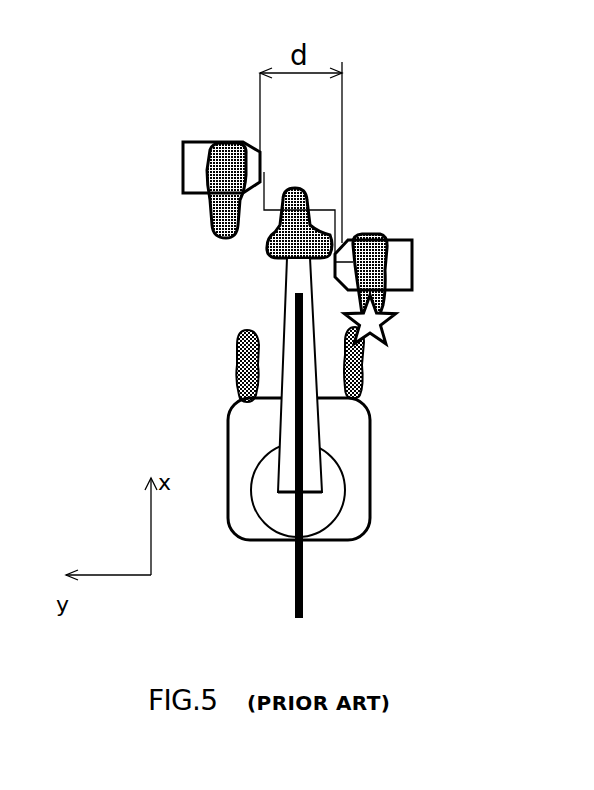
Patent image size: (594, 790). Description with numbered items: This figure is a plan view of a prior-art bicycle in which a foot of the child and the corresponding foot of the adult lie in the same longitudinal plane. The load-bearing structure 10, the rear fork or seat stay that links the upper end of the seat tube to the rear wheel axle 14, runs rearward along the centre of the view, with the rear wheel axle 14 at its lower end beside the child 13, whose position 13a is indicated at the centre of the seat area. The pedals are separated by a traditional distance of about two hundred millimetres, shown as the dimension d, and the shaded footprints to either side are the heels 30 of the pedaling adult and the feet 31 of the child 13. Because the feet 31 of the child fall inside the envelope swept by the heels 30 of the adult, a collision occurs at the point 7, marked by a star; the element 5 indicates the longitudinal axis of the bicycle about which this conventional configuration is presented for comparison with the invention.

The heels of the adult 30 is at (207, 218).
The feet of the child 31 is at (233, 342).
The load-bearing structure 10 is at (285, 312).
The collision 7 is at (390, 332).
The child 13 is at (358, 460).
The circular recess 13a is at (304, 490).
The rear wheel axle 14 is at (283, 493).
The rotation axis / shaft 5 is at (303, 580).